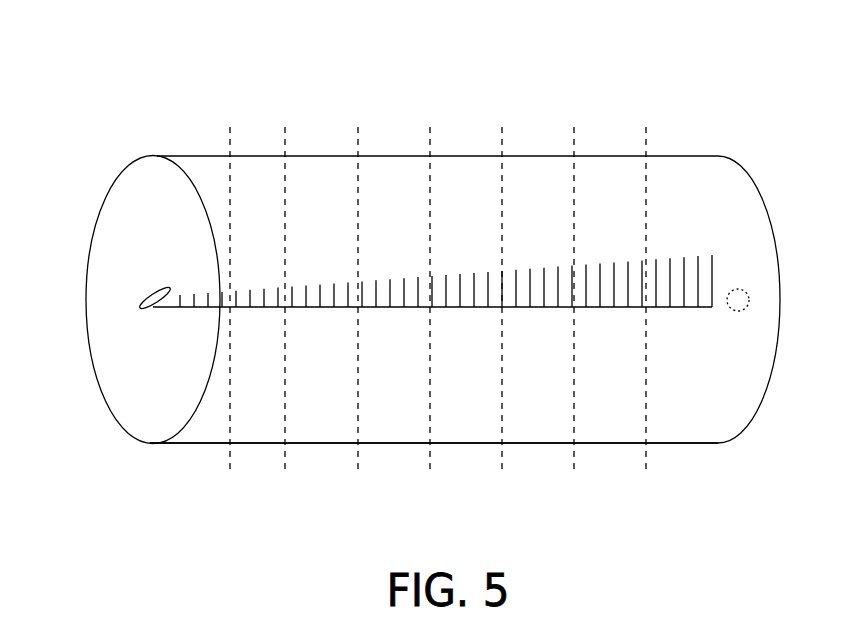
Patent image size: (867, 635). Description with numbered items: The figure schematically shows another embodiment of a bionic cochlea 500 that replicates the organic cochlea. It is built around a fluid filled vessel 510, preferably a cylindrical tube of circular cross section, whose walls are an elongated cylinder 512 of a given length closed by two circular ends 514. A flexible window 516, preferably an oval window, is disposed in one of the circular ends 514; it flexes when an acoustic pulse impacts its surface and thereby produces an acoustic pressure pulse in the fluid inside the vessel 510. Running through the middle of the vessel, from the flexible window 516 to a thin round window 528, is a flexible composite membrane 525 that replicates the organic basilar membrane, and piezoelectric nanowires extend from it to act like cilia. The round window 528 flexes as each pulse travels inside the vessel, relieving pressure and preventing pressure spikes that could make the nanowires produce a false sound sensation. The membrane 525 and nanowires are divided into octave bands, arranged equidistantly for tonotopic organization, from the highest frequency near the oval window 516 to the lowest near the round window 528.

The bionic cochlea 500 is at (232, 35).
The fluid filled vessel 510 is at (167, 154).
The elongated cylinder 512 is at (200, 443).
The circular ends 514 is at (120, 393).
The flexible window 516 is at (143, 293).
The flexible composite membrane 525 is at (465, 307).
The round window 528 is at (738, 313).